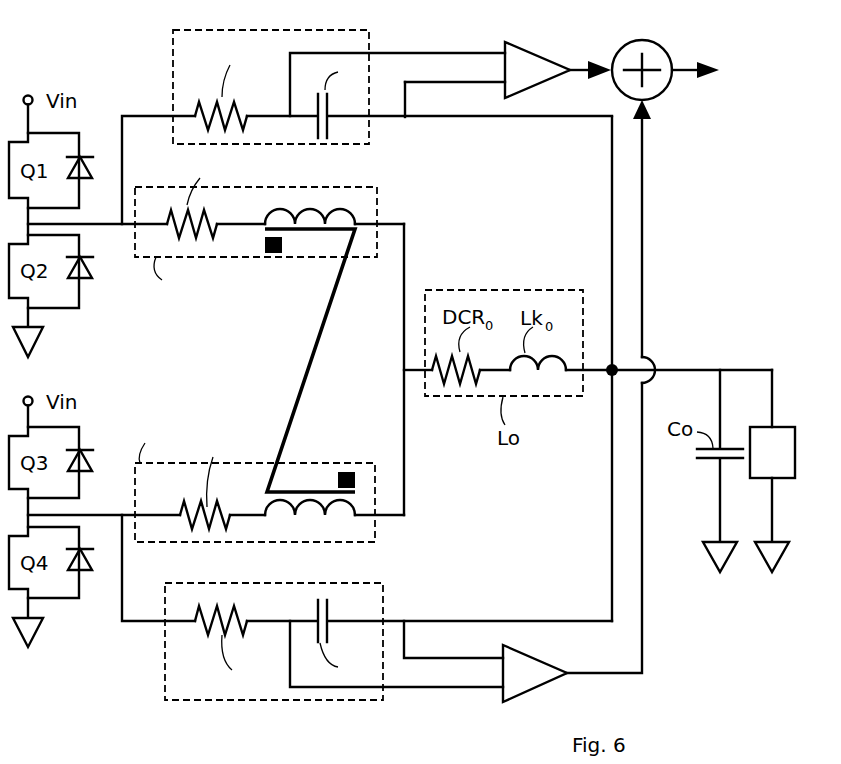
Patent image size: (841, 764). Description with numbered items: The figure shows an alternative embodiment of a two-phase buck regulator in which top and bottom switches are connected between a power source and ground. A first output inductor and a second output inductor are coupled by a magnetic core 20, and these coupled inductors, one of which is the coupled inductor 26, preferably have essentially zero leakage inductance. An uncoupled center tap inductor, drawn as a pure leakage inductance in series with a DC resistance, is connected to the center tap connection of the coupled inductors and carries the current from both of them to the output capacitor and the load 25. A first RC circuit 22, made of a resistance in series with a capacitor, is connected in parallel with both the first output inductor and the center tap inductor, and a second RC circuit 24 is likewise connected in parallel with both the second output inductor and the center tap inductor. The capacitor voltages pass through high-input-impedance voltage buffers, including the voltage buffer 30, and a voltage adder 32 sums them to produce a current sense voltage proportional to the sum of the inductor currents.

The magnetic core 20 is at (318, 338).
The first RC circuit 22 is at (172, 78).
The second RC circuit 24 is at (165, 657).
The load 25 is at (772, 471).
The coupled inductor 26 is at (305, 207).
The voltage buffer or amplifier 30 is at (540, 682).
The voltage adder 32 is at (665, 90).